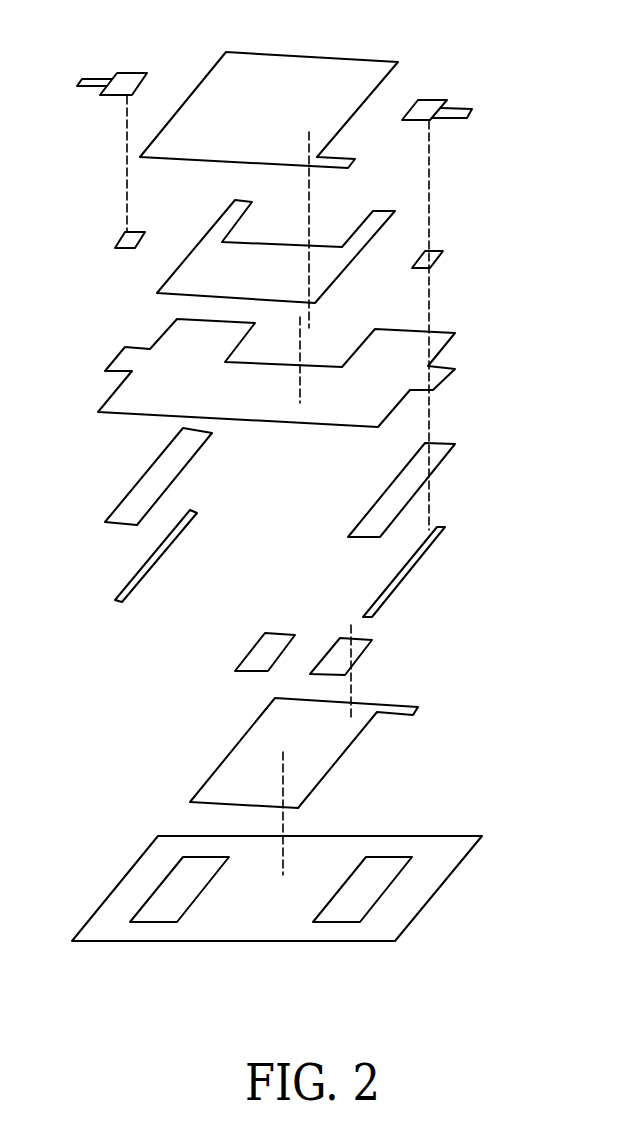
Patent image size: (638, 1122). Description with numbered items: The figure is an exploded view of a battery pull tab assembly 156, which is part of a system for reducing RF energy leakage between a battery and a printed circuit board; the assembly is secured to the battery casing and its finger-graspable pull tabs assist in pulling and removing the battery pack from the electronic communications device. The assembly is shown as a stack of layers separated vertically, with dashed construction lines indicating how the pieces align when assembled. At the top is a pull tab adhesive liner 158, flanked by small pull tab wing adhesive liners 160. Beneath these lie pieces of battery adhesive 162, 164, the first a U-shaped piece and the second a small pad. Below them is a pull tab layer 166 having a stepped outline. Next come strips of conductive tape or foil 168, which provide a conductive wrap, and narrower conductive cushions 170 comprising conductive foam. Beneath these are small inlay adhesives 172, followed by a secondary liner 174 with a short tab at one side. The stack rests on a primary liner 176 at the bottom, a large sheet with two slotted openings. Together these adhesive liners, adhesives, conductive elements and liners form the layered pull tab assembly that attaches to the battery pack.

The battery pull tab assembly 156 is at (84, 160).
The pull tab adhesive liner 158 is at (315, 55).
The pull tab wing adhesive liners 160 is at (437, 100).
The battery adhesive 162 is at (172, 273).
The battery adhesive 164 is at (440, 258).
The pull tab layer 166 is at (447, 378).
The conductive tape or foil 168 is at (442, 463).
The conductive cushions 170 is at (442, 537).
The inlay adhesives 172 is at (372, 643).
The secondary liner 174 is at (343, 758).
The primary liner 176 is at (492, 851).